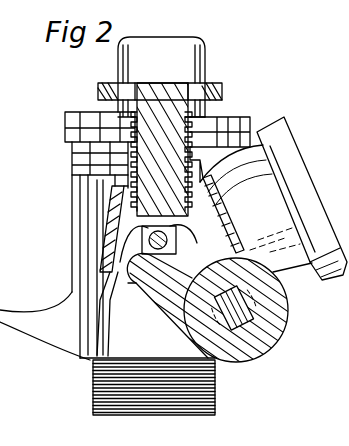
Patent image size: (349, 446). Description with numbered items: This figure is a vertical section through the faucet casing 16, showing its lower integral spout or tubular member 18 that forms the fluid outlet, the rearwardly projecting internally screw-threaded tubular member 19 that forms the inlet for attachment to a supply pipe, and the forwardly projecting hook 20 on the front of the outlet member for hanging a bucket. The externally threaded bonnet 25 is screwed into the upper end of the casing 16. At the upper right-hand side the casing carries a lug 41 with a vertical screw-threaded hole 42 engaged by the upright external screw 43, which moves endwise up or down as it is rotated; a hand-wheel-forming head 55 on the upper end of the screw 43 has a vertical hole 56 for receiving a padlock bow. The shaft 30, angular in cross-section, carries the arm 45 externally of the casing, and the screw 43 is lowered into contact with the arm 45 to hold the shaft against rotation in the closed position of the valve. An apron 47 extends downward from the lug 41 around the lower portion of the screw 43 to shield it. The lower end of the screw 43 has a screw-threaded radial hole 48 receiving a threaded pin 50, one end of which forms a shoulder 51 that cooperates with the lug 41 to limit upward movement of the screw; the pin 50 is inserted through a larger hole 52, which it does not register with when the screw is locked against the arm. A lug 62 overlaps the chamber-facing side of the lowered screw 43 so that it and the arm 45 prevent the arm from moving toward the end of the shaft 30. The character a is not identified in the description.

The adjusting screw a is at (152, 74).
The casing 16 is at (74, 200).
The spout or tubular member 18 is at (93, 390).
The internally screw-threaded tubular member 19 is at (303, 183).
The hook 20 is at (8, 310).
The bonnet 25 is at (72, 112).
The shaft 30 is at (252, 313).
The lug 41 is at (74, 150).
The screw-threaded hole 42 is at (184, 212).
The external screw 43 is at (207, 120).
The arm 45 is at (172, 306).
The apron 47 is at (108, 218).
The screw-threaded radial hole 48 is at (172, 233).
The pin 50 is at (178, 252).
The shoulder 51 is at (116, 268).
The hole 52 is at (104, 234).
The hand-wheel-forming head 55 is at (223, 95).
The hole 56 is at (134, 82).
The lug 62 is at (138, 289).